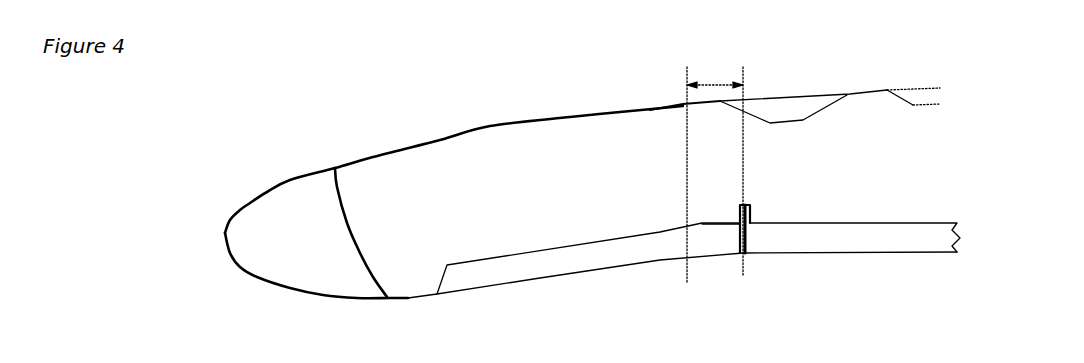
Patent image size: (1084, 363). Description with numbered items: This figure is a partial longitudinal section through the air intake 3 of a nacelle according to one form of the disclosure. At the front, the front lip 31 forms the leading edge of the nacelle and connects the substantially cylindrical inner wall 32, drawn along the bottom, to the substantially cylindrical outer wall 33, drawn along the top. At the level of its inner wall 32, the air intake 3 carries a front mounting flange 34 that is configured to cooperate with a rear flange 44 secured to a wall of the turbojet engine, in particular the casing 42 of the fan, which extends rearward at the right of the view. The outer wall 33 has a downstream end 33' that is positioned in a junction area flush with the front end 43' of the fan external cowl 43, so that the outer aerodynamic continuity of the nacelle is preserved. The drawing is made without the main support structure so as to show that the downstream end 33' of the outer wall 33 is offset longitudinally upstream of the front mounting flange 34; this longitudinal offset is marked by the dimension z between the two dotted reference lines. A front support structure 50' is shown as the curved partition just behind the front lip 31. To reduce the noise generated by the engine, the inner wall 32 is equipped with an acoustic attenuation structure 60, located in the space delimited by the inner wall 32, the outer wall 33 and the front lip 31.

The air intake 3 is at (286, 97).
The front lip 31 is at (225, 237).
The inner wall 32 is at (602, 275).
The outer wall 33 is at (454, 160).
The downstream end 33' is at (622, 72).
The front mounting flange 34 is at (735, 213).
The casing 42 is at (898, 252).
The fan external cowl 43 is at (830, 80).
The front end 43' is at (669, 63).
The rear flange 44 is at (752, 213).
The front support structure 50' is at (340, 255).
The acoustic attenuation structure 60 is at (510, 273).
The overlap distance z is at (715, 172).